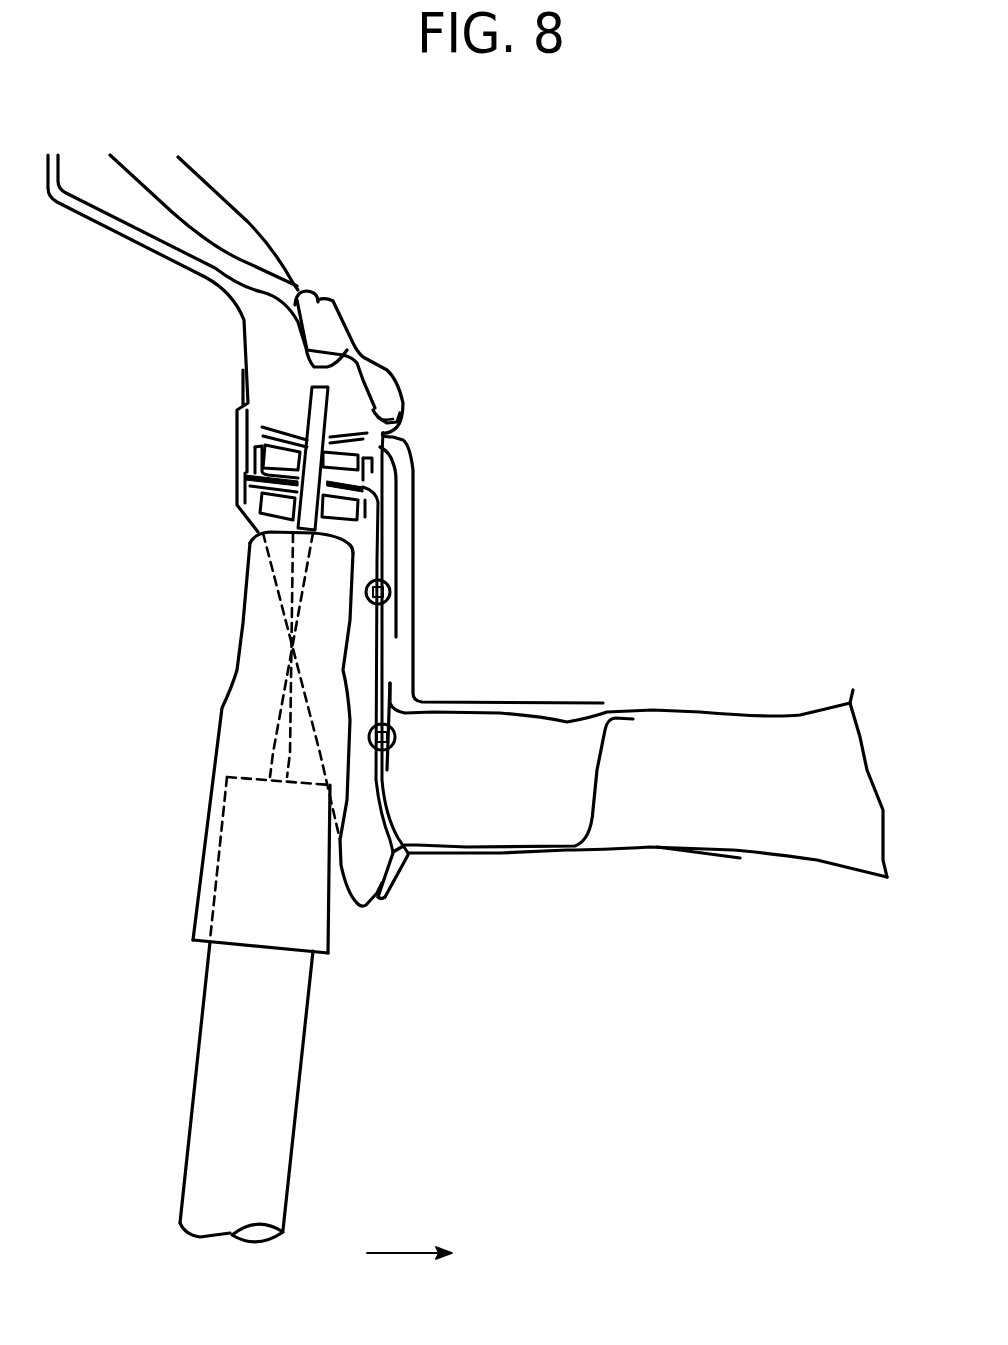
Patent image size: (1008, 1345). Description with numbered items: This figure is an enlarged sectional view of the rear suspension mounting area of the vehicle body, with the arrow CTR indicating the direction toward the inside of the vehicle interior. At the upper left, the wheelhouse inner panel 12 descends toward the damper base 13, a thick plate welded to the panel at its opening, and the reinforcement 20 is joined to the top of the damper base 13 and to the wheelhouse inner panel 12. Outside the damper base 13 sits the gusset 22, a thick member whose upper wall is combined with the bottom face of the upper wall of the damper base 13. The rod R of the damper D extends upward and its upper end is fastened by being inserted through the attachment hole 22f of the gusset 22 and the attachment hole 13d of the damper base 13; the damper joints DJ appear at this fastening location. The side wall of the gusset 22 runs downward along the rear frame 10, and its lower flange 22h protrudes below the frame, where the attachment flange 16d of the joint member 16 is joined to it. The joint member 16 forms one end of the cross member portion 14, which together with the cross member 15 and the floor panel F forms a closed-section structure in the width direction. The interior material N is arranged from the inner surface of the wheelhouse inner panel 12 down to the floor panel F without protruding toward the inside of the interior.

The wheelhouse inner panel 12 is at (236, 327).
The damper base 13 is at (252, 428).
The attachment hole 13d is at (345, 462).
The attachment hole 22f is at (385, 419).
The gusset 22 is at (234, 440).
The lower flange 22h is at (363, 907).
The damper joint DJ is at (253, 458).
The interior material N is at (415, 523).
The reinforcement 20 is at (400, 575).
The damper D is at (208, 786).
The rod R is at (280, 658).
The floor panel F is at (697, 712).
The cross member portion 14 is at (868, 790).
The cross member 15 is at (817, 863).
The joint member 16 is at (613, 857).
The attachment flange 16d is at (363, 883).
The rear frame 10 is at (600, 780).
The direction toward the inside of the interior CTR is at (448, 1253).